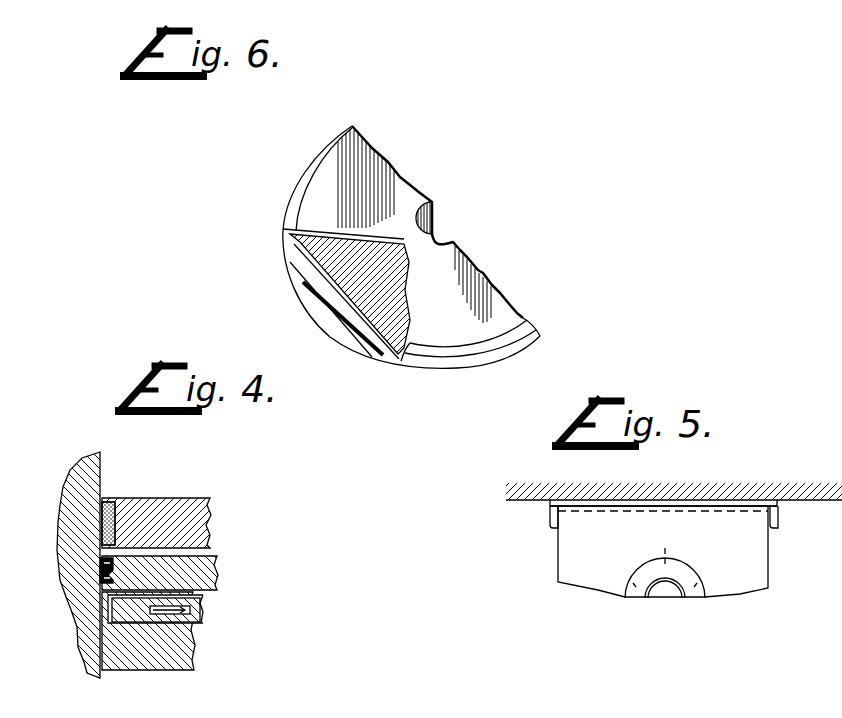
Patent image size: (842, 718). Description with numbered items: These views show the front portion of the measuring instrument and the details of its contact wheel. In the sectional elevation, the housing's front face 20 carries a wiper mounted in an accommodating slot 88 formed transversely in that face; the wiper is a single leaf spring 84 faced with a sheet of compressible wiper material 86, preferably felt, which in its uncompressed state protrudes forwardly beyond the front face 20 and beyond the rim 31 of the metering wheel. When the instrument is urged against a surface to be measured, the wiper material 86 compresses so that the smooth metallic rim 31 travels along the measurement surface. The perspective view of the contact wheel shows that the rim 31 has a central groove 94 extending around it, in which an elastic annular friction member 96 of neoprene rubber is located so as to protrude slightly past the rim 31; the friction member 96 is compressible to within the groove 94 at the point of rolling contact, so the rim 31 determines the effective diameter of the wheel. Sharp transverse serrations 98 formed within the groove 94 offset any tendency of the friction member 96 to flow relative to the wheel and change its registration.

In FIG. 4, the front face 20 is at (72, 487).
In FIG. 6, the contact wheel rim 31 is at (425, 350).
In FIG. 4, the contact wheel rim 31 is at (102, 583).
In FIG. 5, the leaf spring 84 is at (552, 518).
In FIG. 4, the compressible wiper material 86 is at (102, 530).
In FIG. 5, the compressible wiper material 86 is at (642, 503).
In FIG. 5, the accommodating slot 88 is at (690, 512).
In FIG. 6, the central groove 94 is at (300, 222).
In FIG. 6, the elastic annular friction member 96 is at (283, 240).
In FIG. 4, the elastic annular friction member 96 is at (102, 568).
In FIG. 6, the serrations 98 is at (305, 290).